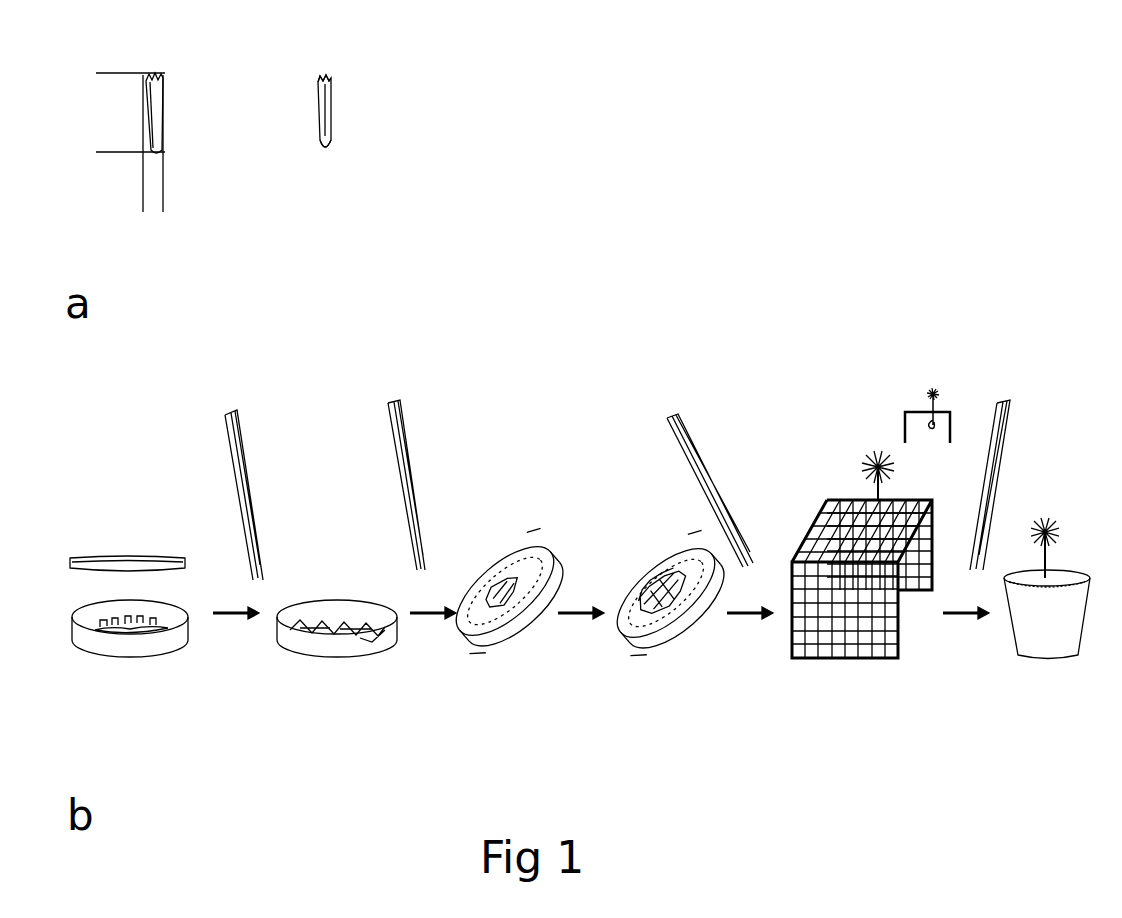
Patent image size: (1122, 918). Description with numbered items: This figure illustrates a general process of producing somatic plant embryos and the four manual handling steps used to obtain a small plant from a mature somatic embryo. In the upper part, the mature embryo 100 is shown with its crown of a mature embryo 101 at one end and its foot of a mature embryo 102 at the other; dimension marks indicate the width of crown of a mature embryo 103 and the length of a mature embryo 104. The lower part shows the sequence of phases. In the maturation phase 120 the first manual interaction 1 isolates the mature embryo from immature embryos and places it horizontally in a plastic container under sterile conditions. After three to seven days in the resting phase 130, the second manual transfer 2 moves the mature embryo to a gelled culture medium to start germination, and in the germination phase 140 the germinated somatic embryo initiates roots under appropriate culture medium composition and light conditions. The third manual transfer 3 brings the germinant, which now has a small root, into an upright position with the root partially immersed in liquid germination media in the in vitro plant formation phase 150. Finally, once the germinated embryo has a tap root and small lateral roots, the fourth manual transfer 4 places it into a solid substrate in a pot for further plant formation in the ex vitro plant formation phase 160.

The mature embryo 100 is at (318, 125).
The crown of a mature embryo 101 is at (330, 85).
The foot of a mature embryo 102 is at (333, 135).
The width of crown of a mature embryo 103 is at (171, 184).
The length of a mature embryo 104 is at (108, 84).
The first manual interaction 1 is at (245, 459).
The second manual transfer 2 is at (406, 454).
The third manual transfer 3 is at (710, 453).
The fourth manual transfer 4 is at (998, 454).
The maturation phase 120 is at (129, 635).
The resting phase 130 is at (337, 657).
The germination phase 140 is at (523, 620).
The in vitro plant formation phase 150 is at (871, 553).
The ex vitro plant formation phase 160 is at (1047, 617).